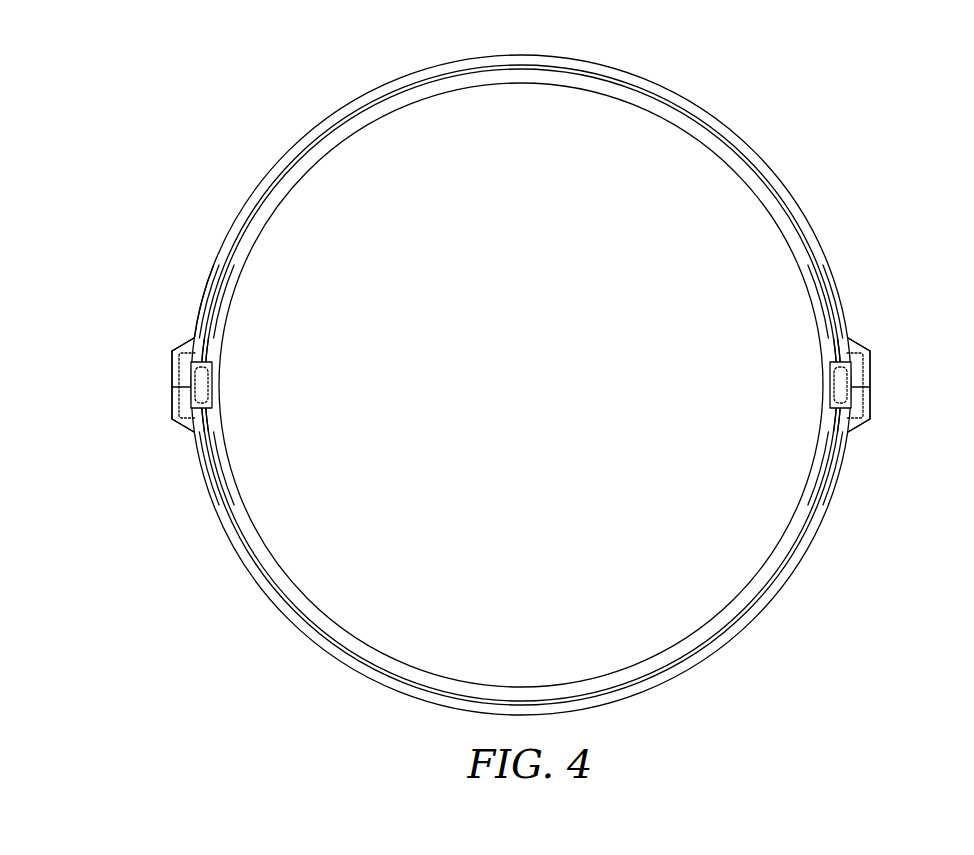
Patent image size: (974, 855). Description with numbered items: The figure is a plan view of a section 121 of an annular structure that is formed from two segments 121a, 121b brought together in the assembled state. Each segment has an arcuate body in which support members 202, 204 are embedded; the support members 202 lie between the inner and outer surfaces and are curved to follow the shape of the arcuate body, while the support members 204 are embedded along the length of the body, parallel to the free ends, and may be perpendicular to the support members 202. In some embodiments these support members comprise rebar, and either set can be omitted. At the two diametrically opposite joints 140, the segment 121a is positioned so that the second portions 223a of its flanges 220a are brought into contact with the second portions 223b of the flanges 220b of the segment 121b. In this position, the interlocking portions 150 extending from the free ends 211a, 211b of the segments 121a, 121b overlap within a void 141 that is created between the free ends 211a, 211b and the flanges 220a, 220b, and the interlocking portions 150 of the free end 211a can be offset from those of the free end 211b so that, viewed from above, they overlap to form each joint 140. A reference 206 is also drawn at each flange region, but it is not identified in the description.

The section 121 is at (900, 134).
The segment 121a is at (767, 163).
The segment 121b is at (768, 606).
The support members 202 is at (625, 84).
The support members 204 is at (355, 118).
The strap 206 is at (185, 344).
The flanges 220a is at (175, 348).
The flanges 220b is at (177, 423).
The second portions 223a is at (172, 370).
The second portions 223b is at (172, 405).
The joint 140 is at (169, 386).
The interlocking portions 150 is at (213, 382).
The void 141 is at (221, 393).
The free end 211a is at (213, 367).
The free end 211b is at (213, 405).